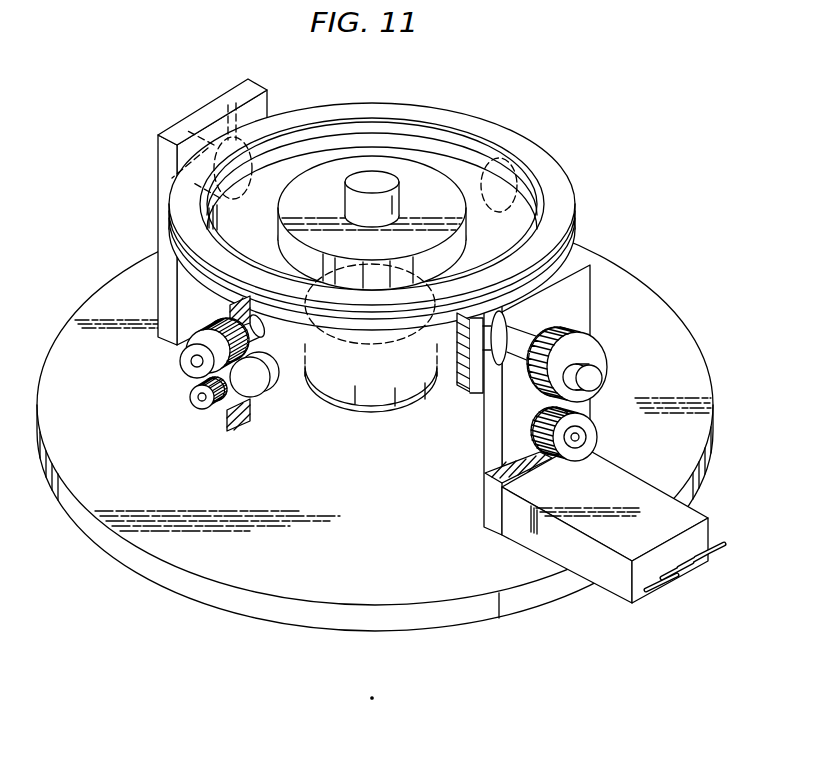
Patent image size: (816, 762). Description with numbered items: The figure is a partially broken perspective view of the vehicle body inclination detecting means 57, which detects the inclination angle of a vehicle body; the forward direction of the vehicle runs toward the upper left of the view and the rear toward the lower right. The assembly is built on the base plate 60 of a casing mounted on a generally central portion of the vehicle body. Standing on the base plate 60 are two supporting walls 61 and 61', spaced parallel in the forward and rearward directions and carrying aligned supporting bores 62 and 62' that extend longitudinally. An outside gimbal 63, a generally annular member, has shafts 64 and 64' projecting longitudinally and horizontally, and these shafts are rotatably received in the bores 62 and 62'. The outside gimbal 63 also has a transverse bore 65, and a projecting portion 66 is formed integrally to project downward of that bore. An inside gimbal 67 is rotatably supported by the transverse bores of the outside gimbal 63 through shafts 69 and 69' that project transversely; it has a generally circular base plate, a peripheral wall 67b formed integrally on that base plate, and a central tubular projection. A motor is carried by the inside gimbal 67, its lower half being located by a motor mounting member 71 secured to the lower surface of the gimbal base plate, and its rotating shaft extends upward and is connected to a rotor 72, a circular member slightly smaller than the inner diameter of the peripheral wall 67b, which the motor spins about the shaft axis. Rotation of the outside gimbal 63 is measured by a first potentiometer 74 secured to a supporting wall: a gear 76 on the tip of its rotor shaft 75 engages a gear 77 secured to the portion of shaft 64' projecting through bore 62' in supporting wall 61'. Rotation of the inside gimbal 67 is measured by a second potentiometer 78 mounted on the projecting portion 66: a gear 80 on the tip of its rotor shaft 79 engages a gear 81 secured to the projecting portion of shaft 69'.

The vehicle body inclination detecting means 57 is at (645, 212).
The base plate 60 is at (540, 602).
The supporting wall 61 is at (186, 212).
The supporting wall 61' is at (505, 400).
The supporting bore 62 is at (240, 313).
The supporting bore 62' is at (547, 340).
The outside gimbal 63 is at (567, 193).
The shaft 64 is at (212, 118).
The shaft 64' is at (616, 368).
The bore 65 is at (220, 321).
The projecting portion 66 is at (242, 421).
The inside gimbal 67 is at (359, 385).
The peripheral wall 67b is at (296, 362).
The shaft 69 is at (167, 360).
The shaft 69' is at (536, 155).
The motor mounting member 71 is at (380, 401).
The rotor 72 is at (457, 168).
The first potentiometer 74 is at (523, 428).
The rotor shaft 75 is at (588, 440).
The gear 76 is at (598, 432).
The gear 77 is at (598, 345).
The second potentiometer 78 is at (258, 392).
The rotor shaft 79 is at (192, 397).
The gear 80 is at (218, 407).
The gear 81 is at (200, 329).